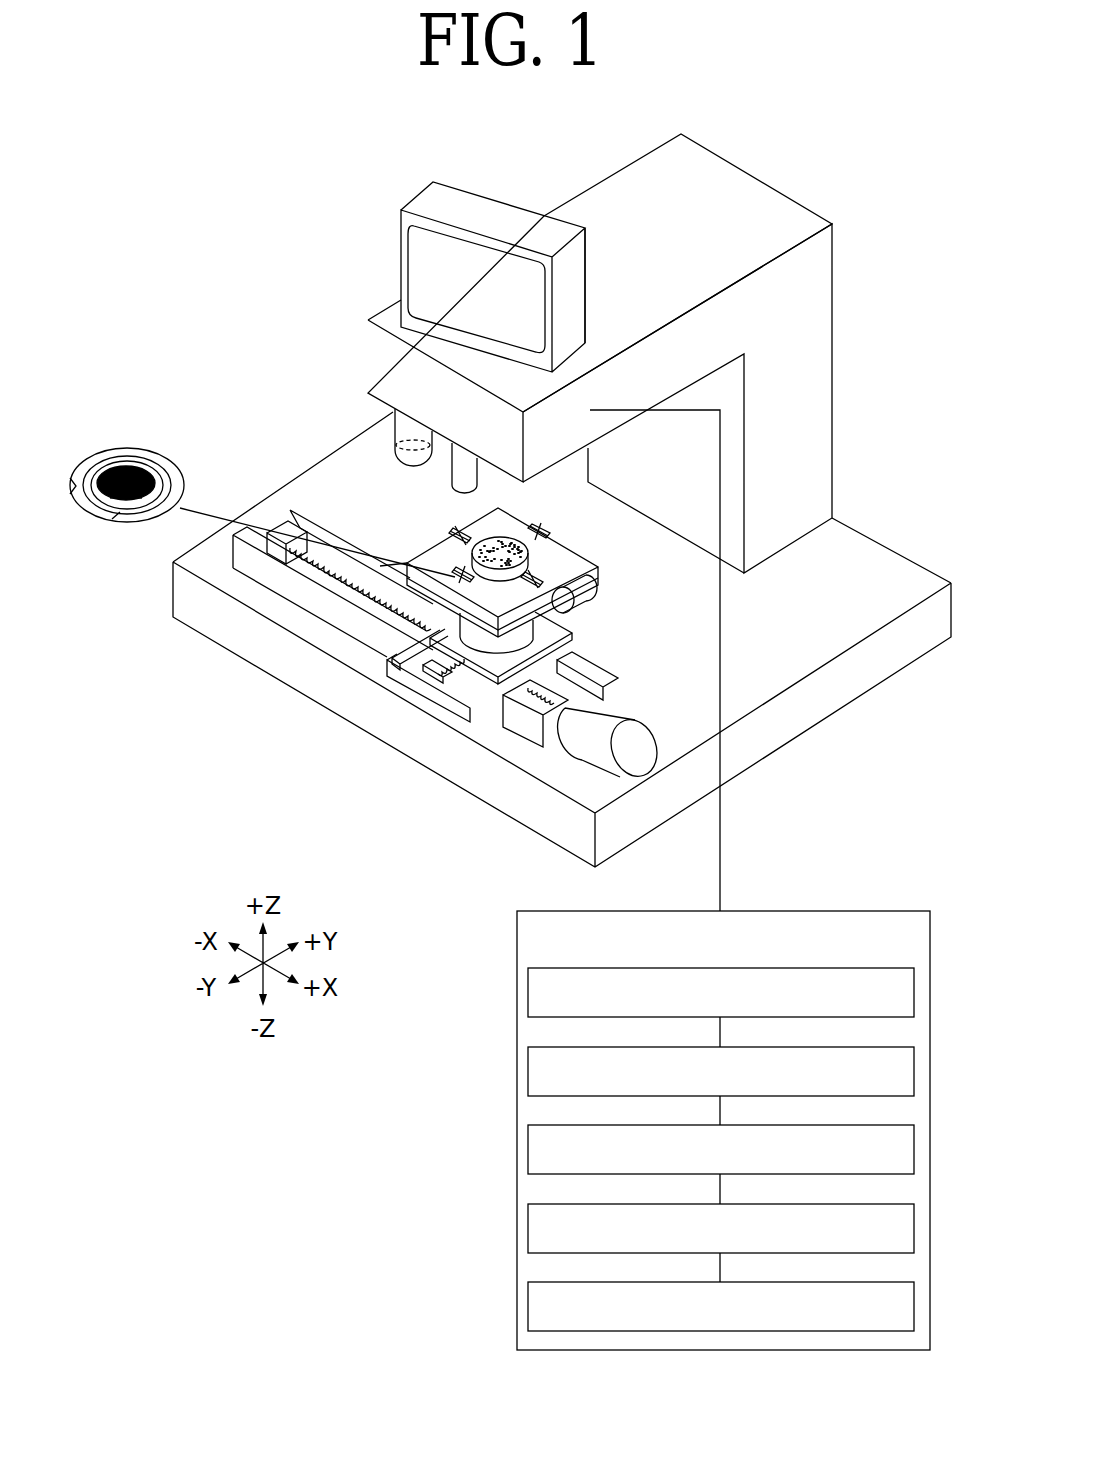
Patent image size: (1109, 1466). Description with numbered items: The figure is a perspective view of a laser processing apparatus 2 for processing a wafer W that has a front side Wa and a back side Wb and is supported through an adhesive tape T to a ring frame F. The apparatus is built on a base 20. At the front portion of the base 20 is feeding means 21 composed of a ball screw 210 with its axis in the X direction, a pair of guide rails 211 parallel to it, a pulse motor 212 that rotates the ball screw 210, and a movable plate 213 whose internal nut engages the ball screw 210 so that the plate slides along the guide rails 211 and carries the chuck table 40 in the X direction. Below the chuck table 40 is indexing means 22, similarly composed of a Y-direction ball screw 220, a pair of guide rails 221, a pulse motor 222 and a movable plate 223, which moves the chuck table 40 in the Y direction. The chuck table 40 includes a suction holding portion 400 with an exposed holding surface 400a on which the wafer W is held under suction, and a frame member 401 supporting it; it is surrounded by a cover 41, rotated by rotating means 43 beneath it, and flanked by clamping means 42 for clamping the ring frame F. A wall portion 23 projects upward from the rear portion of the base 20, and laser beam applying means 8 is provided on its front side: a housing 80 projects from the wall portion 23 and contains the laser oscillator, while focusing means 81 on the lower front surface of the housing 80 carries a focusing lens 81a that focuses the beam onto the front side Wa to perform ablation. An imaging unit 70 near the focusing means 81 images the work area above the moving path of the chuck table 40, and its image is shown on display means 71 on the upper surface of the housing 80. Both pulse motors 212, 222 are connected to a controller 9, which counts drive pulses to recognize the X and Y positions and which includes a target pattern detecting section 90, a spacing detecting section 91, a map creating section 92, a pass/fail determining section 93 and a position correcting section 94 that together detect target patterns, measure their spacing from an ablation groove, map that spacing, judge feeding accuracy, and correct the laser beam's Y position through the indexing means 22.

The laser processing apparatus 2 is at (374, 166).
The laser beam applying means 8 is at (378, 270).
The controller 9 is at (810, 912).
The base 20 is at (228, 625).
The feeding means 21 is at (583, 830).
The indexing means 22 is at (490, 728).
The wall portion 23 is at (822, 417).
The chuck table 40 is at (410, 516).
The cover 41 is at (527, 512).
The clamping means 42 is at (408, 553).
The rotating means 43 is at (534, 628).
The imaging unit 70 is at (469, 473).
The display means 71 is at (457, 201).
The housing 80 is at (597, 208).
The focusing means 81 is at (351, 398).
The focusing lens 81a is at (398, 446).
The target pattern detecting section 90 is at (916, 992).
The spacing detecting section 91 is at (916, 1071).
The map creating section 92 is at (916, 1149).
The pass/fail determining section 93 is at (916, 1228).
The position correcting section 94 is at (916, 1306).
The ball screw 210 is at (277, 632).
The guide rails 211 is at (357, 630).
The pulse motor 212 is at (614, 718).
The movable plate 213 is at (387, 675).
The ball screw 220 is at (437, 683).
The guide rails 221 is at (474, 703).
The pulse motor 222 is at (577, 598).
The movable plate 223 is at (553, 746).
The suction holding portion 400 is at (498, 540).
The holding surface 400a is at (547, 537).
The frame member 401 is at (595, 558).
The ring frame F is at (112, 452).
The adhesive tape T is at (158, 470).
The wafer W is at (100, 504).
The front side Wa is at (132, 466).
The back side Wb is at (128, 508).